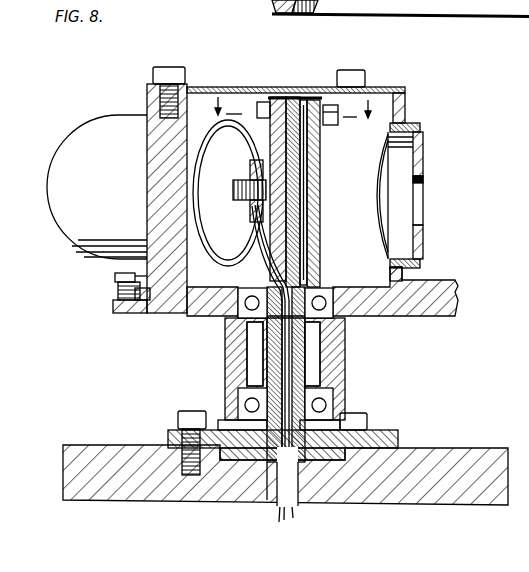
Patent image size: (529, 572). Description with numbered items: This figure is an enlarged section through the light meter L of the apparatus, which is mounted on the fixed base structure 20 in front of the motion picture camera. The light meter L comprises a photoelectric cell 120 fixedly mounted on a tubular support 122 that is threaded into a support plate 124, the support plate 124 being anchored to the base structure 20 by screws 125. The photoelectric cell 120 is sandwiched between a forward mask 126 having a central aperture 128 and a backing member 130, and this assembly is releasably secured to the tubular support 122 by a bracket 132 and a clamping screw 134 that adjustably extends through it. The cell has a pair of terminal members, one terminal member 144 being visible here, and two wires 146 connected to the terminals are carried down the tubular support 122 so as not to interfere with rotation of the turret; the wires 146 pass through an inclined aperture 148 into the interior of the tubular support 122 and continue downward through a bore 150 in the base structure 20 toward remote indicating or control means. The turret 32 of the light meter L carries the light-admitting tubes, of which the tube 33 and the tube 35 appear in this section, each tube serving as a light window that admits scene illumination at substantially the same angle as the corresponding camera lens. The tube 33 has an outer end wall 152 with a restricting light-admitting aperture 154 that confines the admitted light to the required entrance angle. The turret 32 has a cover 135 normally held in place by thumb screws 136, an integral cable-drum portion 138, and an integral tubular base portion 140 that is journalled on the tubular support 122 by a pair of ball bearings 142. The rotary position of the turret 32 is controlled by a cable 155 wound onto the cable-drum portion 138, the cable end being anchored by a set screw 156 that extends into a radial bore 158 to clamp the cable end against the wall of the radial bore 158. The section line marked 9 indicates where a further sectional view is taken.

The base structure 20 is at (475, 446).
The turret 32 is at (156, 142).
The tube 33 is at (410, 126).
The tube 35 is at (86, 136).
The section line 9- 9 is at (289, 108).
The light meter L is at (422, 95).
The photoelectric cell 120 is at (305, 186).
The tubular support 122 is at (300, 346).
The support plate 124 is at (392, 430).
The screws 125 is at (185, 419).
The forward mask 126 is at (318, 242).
The central aperture 128 is at (313, 203).
The backing member 130 is at (292, 100).
The bracket 132 is at (262, 214).
The clamping screw 134 is at (250, 190).
The cover 135 is at (248, 87).
The thumb screws 136 is at (170, 70).
The cable-drum portion 138 is at (447, 284).
The tubular base portion 140 is at (345, 364).
The ball bearings 142 is at (245, 385).
The terminal member 144 is at (333, 105).
The wires 146 is at (289, 507).
The inclined aperture 148 is at (262, 278).
The bore 150 is at (266, 500).
The outer end wall 152 is at (422, 140).
The light-admitting aperture 154 is at (420, 184).
The cable 155 is at (460, 295).
The set screw 156 is at (128, 277).
The radial bore 158 is at (143, 305).